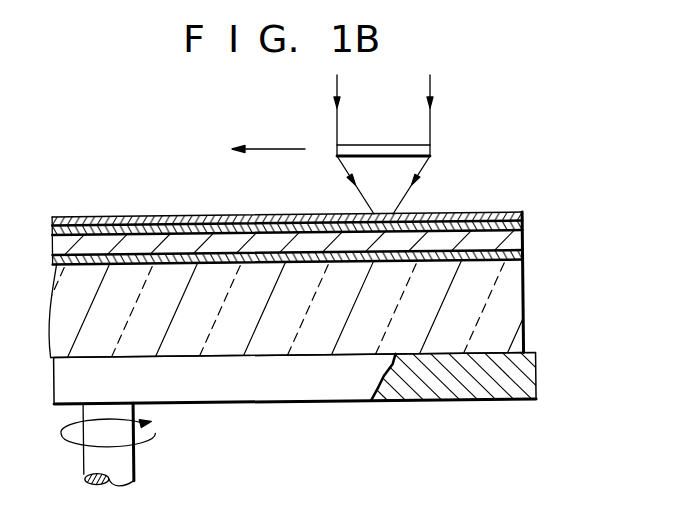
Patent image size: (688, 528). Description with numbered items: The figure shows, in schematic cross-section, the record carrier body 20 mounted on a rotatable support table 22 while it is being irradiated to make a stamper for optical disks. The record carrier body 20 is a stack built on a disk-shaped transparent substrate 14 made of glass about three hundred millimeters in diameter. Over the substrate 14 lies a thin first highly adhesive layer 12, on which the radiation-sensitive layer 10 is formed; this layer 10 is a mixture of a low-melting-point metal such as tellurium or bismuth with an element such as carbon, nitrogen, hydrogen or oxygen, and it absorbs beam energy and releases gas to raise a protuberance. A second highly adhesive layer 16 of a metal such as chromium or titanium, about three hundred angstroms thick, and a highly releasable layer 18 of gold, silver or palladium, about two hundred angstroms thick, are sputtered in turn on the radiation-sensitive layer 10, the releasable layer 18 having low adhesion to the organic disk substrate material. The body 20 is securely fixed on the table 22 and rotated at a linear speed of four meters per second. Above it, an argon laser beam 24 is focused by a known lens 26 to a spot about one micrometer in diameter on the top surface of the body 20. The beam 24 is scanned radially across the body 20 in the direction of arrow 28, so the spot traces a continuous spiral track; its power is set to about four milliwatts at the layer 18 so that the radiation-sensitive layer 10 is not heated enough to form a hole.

The radiation-sensitive layer 10 is at (515, 243).
The first highly adhesive layer 12 is at (517, 258).
The transparent substrate 14 is at (513, 331).
The second highly adhesive layer 16 is at (523, 228).
The highly releasable layer 18 is at (495, 213).
The record carrier body 20 is at (534, 297).
The rotatable support table 22 is at (528, 368).
The argon laser beam 24 is at (431, 121).
The lens 26 is at (431, 152).
The arrow 28 is at (278, 149).